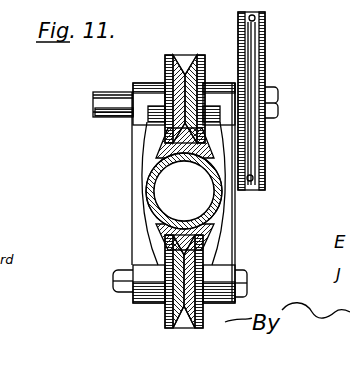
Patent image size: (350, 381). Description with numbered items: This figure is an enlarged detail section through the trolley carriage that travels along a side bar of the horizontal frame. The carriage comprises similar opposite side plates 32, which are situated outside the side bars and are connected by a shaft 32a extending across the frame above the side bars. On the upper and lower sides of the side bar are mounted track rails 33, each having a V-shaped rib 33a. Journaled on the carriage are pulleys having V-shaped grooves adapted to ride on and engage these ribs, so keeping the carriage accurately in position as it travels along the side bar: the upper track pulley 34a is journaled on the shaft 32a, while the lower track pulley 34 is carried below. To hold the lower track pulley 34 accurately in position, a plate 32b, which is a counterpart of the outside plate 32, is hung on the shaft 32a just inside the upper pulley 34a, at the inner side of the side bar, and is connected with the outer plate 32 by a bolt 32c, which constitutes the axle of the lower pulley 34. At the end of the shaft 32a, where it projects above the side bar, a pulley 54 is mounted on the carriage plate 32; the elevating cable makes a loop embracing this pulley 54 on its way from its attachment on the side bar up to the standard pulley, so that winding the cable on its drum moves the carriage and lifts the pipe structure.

The side plate 32 is at (233, 253).
The shaft 32a is at (105, 117).
The plate 32b is at (108, 146).
The bolt 32c is at (245, 278).
The track rail 33 is at (197, 147).
The V-shaped rib 33a is at (200, 128).
The lower track pulley 34 is at (190, 330).
The upper track pulley 34a is at (177, 62).
The pulley 54 is at (253, 57).